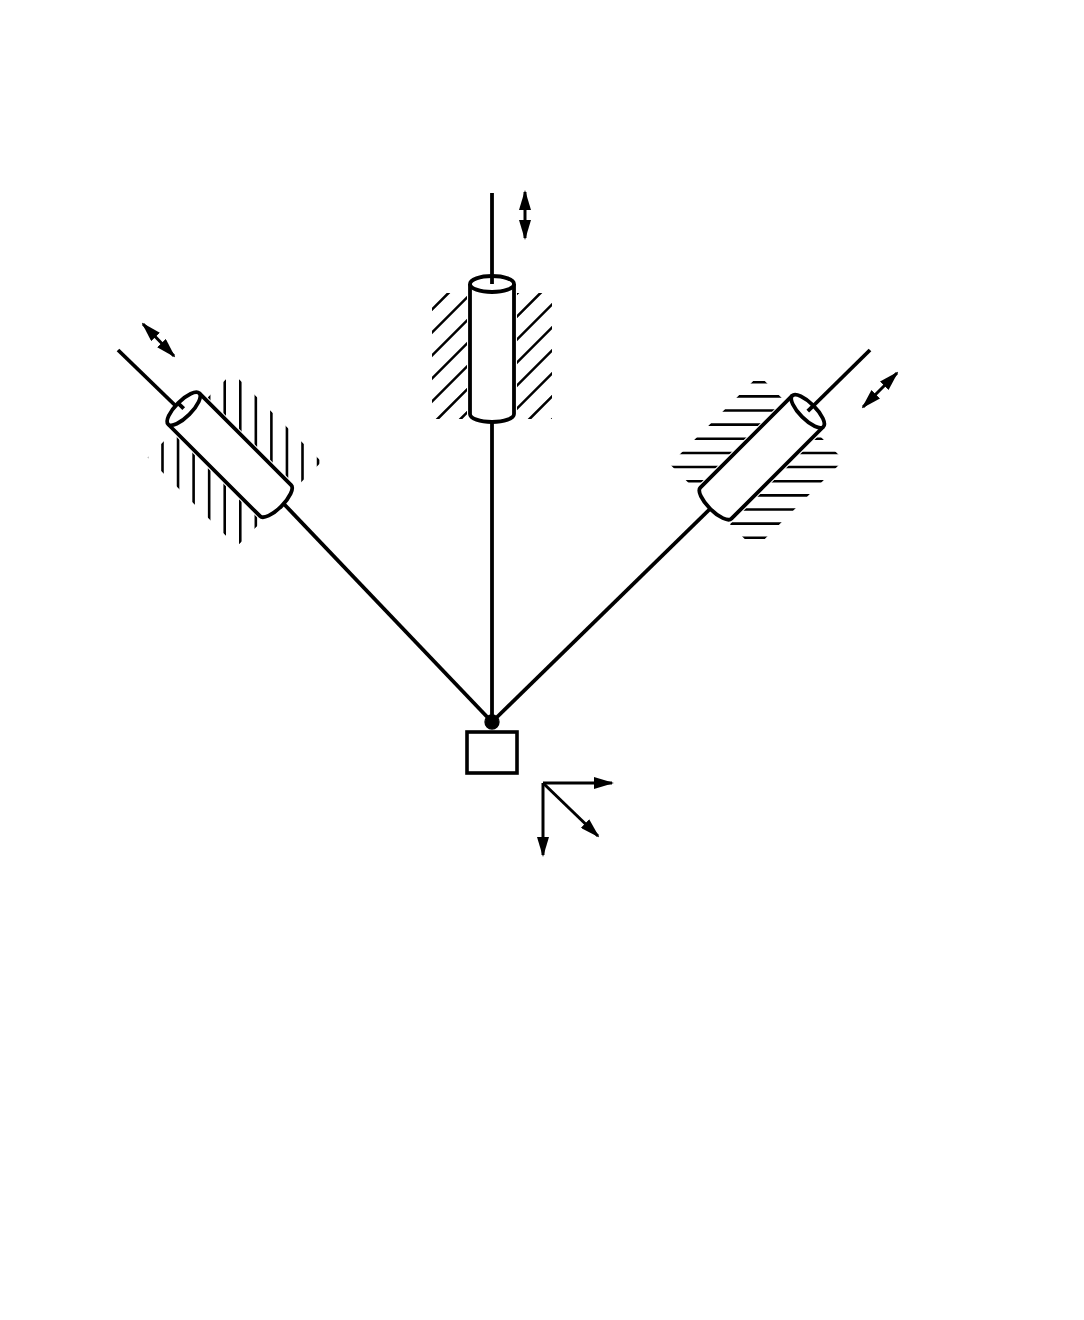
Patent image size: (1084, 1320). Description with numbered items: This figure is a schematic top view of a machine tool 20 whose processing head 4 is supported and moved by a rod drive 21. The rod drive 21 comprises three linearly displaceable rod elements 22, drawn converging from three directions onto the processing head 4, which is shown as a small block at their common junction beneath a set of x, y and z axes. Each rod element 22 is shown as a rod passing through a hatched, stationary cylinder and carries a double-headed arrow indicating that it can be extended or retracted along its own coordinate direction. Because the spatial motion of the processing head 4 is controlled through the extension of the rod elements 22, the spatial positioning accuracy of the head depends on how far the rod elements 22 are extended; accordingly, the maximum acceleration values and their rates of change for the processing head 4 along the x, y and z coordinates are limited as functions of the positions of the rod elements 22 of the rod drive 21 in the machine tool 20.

The machine tool 20 is at (498, 617).
The rod drive 21 is at (628, 352).
The rod element 22 is at (492, 342).
The processing head 4 is at (480, 755).